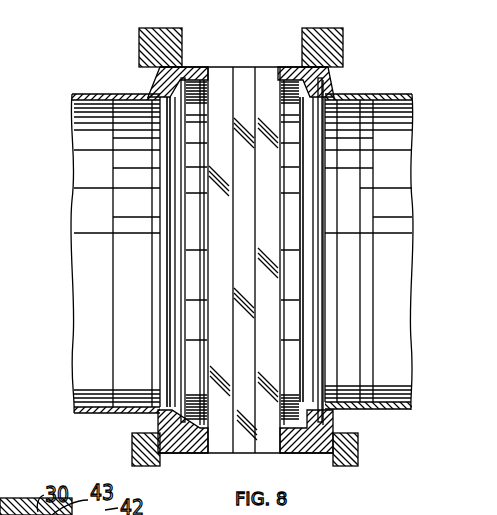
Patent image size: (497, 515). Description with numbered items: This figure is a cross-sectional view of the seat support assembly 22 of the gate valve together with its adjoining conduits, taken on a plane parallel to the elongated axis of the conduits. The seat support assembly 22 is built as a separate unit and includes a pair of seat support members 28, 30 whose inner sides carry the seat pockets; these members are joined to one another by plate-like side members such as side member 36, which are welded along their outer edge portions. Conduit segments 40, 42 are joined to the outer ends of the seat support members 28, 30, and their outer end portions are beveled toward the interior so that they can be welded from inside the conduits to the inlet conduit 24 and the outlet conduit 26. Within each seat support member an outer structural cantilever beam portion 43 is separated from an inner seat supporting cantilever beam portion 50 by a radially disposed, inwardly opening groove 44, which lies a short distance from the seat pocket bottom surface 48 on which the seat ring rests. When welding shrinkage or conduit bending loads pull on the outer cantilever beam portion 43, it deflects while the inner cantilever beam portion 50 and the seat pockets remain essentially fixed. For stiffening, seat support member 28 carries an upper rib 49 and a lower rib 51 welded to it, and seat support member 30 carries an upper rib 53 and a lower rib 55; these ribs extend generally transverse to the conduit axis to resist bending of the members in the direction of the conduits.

The seat support assembly 22 is at (88, 80).
The inlet conduit 24 is at (107, 190).
The outlet conduit 26 is at (399, 160).
The seat support member 28 is at (160, 80).
The seat support member 30 is at (328, 72).
The side member 36 is at (222, 78).
The conduit segment 40 is at (135, 328).
The conduit segment 42 is at (355, 233).
The outer structural cantilever beam portion 43 is at (160, 423).
The groove 44 is at (165, 235).
The seat pocket bottom surface 48 is at (200, 454).
The upper rib 49 is at (141, 41).
The inner seat supporting cantilever beam portion 50 is at (312, 292).
The lower rib 51 is at (132, 455).
The upper rib 53 is at (345, 30).
The lower rib 55 is at (359, 440).